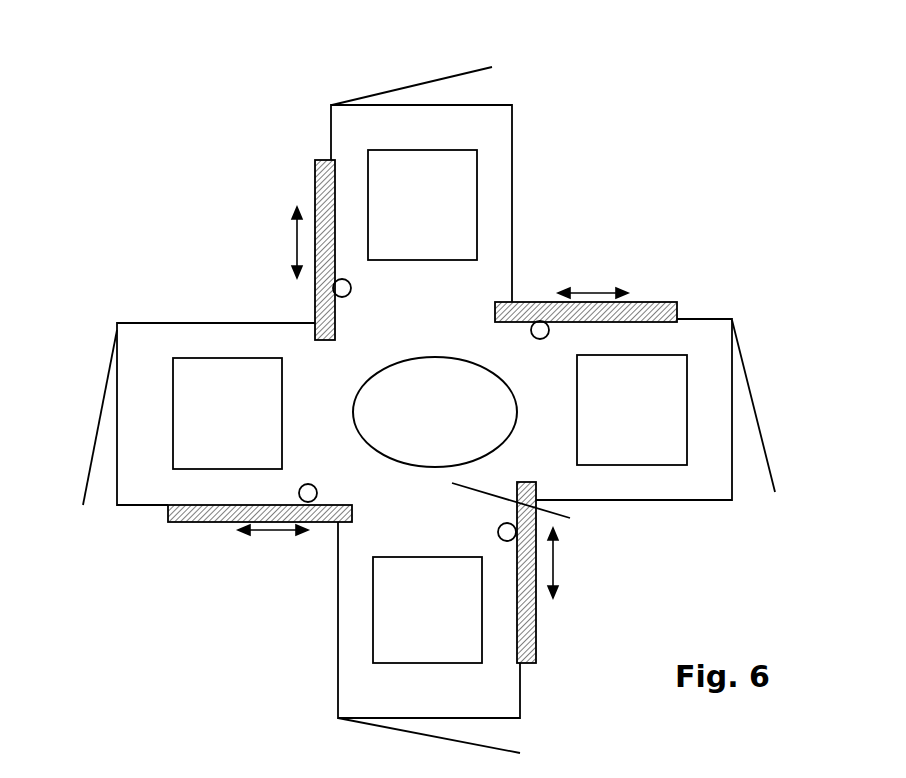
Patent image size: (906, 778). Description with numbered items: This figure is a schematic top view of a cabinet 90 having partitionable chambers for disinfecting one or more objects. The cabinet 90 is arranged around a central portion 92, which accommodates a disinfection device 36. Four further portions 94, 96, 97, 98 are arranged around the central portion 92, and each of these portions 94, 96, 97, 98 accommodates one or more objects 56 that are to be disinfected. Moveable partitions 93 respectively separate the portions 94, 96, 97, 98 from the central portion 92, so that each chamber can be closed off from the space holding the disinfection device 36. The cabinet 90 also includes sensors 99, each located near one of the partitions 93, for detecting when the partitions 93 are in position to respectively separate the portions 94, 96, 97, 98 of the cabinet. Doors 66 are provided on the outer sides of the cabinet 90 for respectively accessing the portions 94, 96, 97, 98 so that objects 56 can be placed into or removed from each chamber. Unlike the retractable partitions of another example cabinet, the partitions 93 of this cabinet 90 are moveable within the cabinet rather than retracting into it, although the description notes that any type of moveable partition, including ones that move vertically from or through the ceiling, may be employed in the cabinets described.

The disinfection device 36 is at (435, 412).
The objects 56 is at (430, 406).
The doors 66 is at (373, 97).
The cabinet 90 is at (680, 188).
The portion 92 is at (529, 506).
The moveable partitions 93 is at (323, 205).
The portion 94 is at (493, 178).
The portion 96 is at (702, 480).
The portion 97 is at (347, 667).
The portion 98 is at (135, 370).
The sensors 99 is at (349, 294).